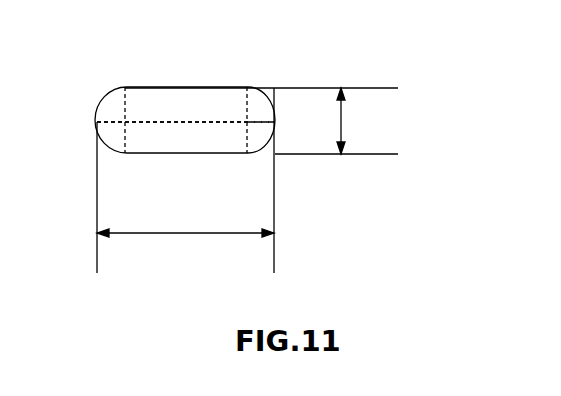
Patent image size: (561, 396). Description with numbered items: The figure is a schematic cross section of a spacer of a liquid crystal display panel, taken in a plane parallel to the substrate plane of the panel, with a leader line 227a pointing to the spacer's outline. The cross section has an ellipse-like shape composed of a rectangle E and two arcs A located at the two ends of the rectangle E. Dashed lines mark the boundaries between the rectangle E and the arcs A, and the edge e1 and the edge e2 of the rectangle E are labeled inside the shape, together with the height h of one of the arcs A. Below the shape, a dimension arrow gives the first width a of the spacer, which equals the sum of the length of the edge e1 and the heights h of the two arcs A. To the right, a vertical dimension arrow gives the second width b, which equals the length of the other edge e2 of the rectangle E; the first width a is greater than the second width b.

The rectangle E is at (188, 105).
The arcs A is at (113, 88).
The surface of member 227a is at (282, 102).
The first width a is at (185, 252).
The second width b is at (357, 121).
The height of arc h is at (261, 134).
The edge of rectangle e1 is at (186, 139).
The another edge of rectangle e2 is at (123, 134).